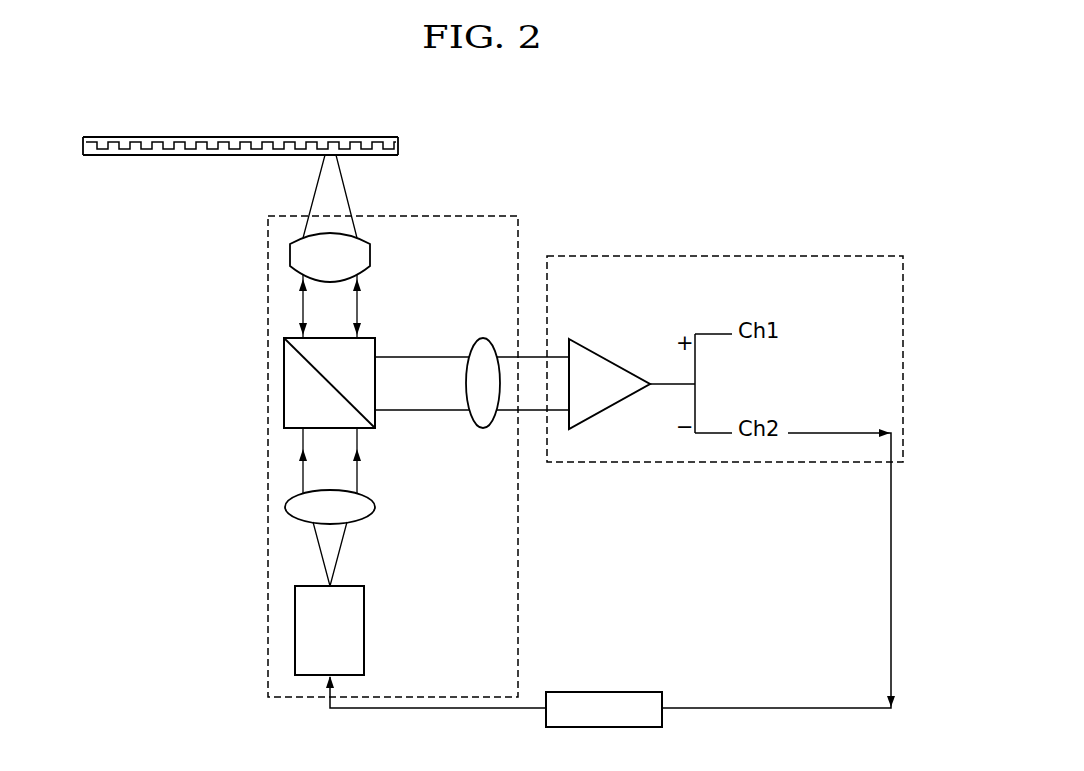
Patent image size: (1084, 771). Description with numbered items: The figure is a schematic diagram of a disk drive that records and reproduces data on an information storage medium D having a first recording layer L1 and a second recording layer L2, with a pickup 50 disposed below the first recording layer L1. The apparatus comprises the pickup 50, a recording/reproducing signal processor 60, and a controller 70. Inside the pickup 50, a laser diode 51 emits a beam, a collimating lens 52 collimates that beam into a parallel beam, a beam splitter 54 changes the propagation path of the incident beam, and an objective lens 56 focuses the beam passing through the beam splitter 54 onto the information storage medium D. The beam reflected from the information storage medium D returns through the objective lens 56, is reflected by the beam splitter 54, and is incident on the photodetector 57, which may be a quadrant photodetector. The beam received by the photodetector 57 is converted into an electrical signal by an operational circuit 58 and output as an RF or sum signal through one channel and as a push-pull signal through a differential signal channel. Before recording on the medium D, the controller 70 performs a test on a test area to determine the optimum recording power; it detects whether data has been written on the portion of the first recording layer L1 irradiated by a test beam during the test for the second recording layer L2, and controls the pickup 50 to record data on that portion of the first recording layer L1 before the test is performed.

The information storage medium D is at (265, 132).
The first recording layer L1 is at (399, 154).
The second recording layer L2 is at (399, 140).
The pickup 50 is at (258, 657).
The laser diode 51 is at (295, 596).
The collimating lens 52 is at (285, 507).
The beam splitter 54 is at (284, 357).
The objective lens 56 is at (290, 251).
The photodetector 57 is at (485, 337).
The operational circuit 58 is at (610, 357).
The recording/reproducing signal processor 60 is at (662, 240).
The controller 70 is at (611, 690).